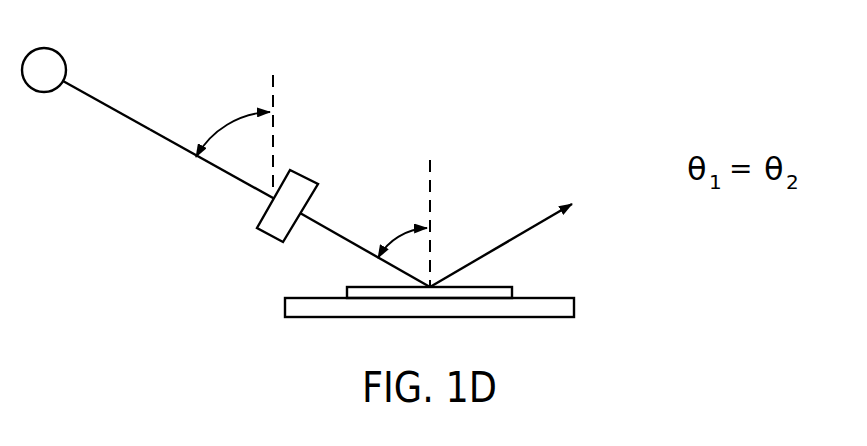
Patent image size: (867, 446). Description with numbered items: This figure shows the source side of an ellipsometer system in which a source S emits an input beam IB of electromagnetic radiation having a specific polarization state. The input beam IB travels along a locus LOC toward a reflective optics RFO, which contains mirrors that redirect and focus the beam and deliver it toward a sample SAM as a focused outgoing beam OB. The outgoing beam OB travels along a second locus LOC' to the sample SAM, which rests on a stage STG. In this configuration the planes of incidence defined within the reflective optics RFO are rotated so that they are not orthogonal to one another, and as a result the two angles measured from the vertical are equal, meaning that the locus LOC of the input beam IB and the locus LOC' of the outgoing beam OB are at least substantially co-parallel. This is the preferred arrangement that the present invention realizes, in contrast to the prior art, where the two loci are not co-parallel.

The source S is at (53, 83).
The input beam IB is at (101, 82).
The locus of the input beam LOC is at (194, 177).
The locus of the outgoing beam LOC' is at (320, 254).
The outgoing beam OB is at (319, 208).
The reflective optics RFO is at (309, 170).
The sample SAM is at (497, 282).
The stage STG is at (570, 292).